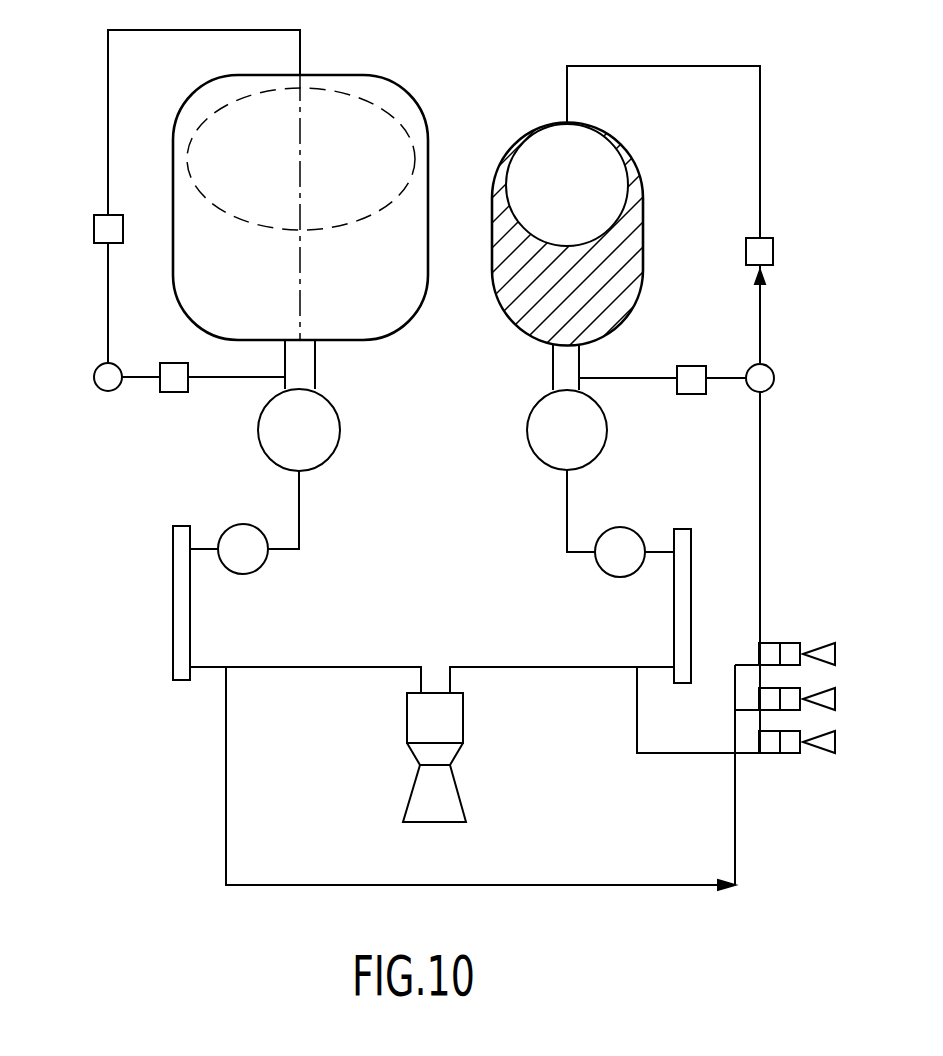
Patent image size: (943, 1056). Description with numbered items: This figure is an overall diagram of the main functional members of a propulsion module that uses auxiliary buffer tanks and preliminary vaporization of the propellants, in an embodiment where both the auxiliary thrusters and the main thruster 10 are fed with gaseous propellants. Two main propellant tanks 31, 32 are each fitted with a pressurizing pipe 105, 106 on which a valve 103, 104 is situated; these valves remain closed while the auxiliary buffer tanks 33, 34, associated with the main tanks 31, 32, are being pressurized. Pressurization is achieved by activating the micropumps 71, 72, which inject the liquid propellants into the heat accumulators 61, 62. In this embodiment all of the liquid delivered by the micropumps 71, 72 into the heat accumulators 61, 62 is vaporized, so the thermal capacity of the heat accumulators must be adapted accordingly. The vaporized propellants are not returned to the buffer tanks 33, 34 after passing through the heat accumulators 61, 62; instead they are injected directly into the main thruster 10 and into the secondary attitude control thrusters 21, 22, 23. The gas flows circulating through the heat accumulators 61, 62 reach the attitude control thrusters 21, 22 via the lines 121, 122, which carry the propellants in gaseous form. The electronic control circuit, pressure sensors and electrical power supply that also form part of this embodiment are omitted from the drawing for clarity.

The main thruster 10 is at (450, 800).
The attitude control thruster 21 is at (800, 645).
The attitude control thruster 22 is at (800, 692).
The auxiliary thruster 23 is at (800, 736).
The main propellant tank 31 is at (370, 75).
The main propellant tank 32 is at (622, 140).
The auxiliary buffer tank 33 is at (340, 425).
The auxiliary buffer tank 34 is at (530, 428).
The heat accumulator 61 is at (173, 608).
The heat accumulator 62 is at (691, 613).
The micropump 71 is at (250, 565).
The micropump 72 is at (612, 567).
The valve 103 is at (96, 230).
The valve 104 is at (774, 252).
The pipe 105 is at (108, 98).
The pipe 106 is at (762, 150).
The line 121 is at (540, 888).
The line 122 is at (683, 751).